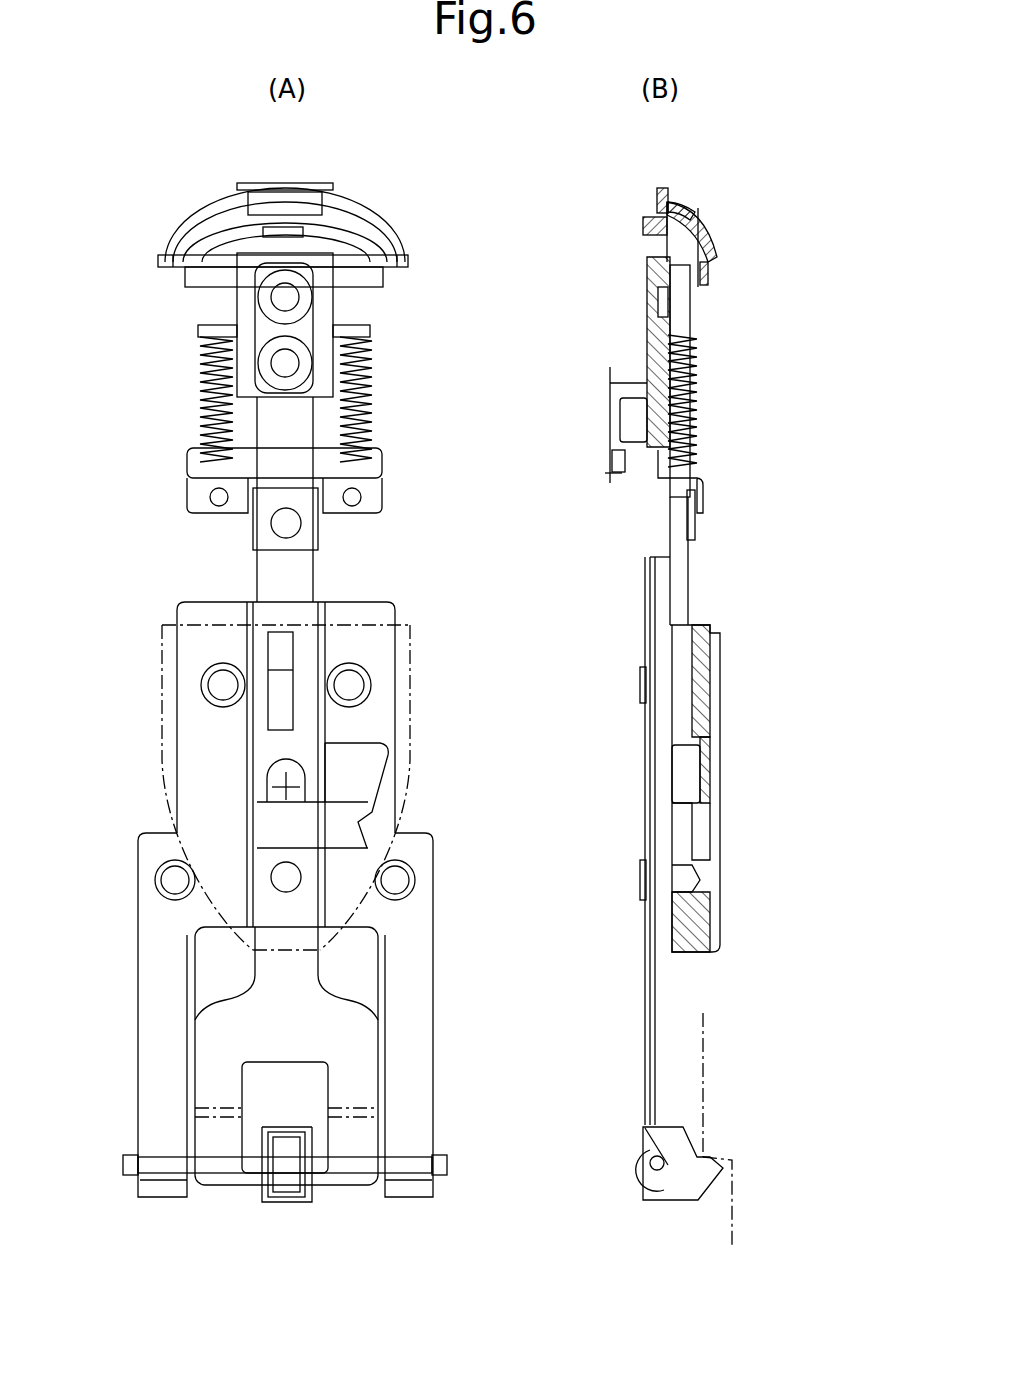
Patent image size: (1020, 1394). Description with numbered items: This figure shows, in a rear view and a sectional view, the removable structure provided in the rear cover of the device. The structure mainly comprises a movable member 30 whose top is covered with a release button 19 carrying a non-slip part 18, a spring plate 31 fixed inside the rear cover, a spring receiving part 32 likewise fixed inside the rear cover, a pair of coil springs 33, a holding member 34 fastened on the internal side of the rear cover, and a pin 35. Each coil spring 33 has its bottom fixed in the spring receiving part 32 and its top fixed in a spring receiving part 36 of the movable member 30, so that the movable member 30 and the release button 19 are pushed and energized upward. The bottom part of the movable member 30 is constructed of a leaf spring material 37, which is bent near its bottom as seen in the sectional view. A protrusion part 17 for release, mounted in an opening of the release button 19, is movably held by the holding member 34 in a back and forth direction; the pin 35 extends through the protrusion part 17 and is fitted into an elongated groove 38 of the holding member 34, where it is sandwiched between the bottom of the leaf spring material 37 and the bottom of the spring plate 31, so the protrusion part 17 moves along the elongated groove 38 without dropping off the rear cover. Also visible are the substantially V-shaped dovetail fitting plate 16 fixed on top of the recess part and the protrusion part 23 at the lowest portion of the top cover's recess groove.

The fitting plate 16 is at (160, 688).
The protrusion part for release 17 is at (283, 1140).
The non-slip part 18 is at (683, 194).
The release button 19 is at (390, 210).
The protrusion part 23 is at (720, 1150).
The movable member 30 is at (305, 578).
The spring plate 31 is at (395, 797).
The spring receiving part 32 is at (383, 490).
The coil spring 33 is at (205, 400).
The holding member 34 is at (290, 1205).
The pin 35 is at (452, 1160).
The spring receiving part 36 is at (370, 333).
The leaf spring material 37 is at (371, 1135).
The elongated groove 38 is at (310, 1175).